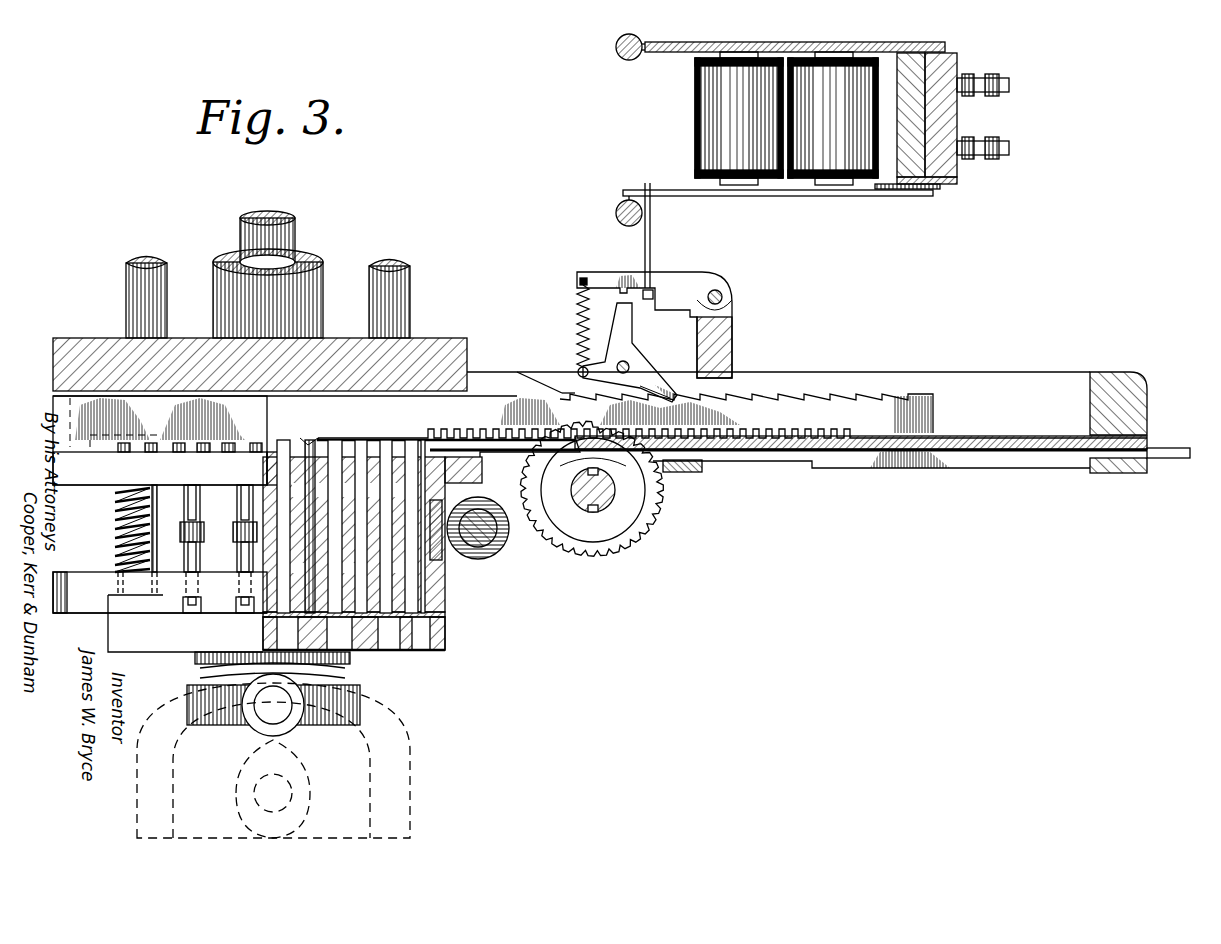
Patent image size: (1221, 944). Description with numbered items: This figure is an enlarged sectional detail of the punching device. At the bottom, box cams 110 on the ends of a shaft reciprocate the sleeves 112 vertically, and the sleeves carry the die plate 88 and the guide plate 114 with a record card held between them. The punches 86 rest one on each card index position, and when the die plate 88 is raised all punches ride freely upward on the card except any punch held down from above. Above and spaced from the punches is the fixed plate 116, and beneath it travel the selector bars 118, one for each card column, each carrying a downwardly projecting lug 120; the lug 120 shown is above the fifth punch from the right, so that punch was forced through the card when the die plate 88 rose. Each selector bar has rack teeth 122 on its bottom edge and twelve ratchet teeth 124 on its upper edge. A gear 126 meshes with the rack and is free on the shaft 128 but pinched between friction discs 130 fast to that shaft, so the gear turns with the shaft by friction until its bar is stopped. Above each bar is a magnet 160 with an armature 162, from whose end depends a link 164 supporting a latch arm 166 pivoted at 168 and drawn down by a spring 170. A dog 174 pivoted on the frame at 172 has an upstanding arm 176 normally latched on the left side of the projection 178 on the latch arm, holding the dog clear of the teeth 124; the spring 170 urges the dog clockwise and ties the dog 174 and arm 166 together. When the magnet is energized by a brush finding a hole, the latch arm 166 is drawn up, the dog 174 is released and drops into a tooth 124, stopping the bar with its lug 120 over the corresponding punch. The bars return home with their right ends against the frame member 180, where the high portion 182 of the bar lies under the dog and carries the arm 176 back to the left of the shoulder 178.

The punches 86 is at (253, 443).
The die plate 88 is at (186, 641).
The box cams 110 is at (403, 758).
The sleeves 112 is at (313, 283).
The guide plate 114 is at (80, 598).
The fixed plate 116 is at (70, 345).
The selector bars 118 is at (475, 403).
The lug 120 is at (320, 438).
The rack teeth 122 is at (505, 432).
The ratchet teeth 124 is at (745, 396).
The gear 126 is at (607, 553).
The shaft 128 is at (578, 510).
The friction discs 130 is at (627, 517).
The magnet 160 is at (805, 103).
The armature 162 is at (793, 192).
The link 164 is at (652, 252).
The latch arm 166 is at (603, 273).
The pivot 168 is at (722, 297).
The spring 170 is at (580, 302).
The pivot 172 is at (632, 372).
The dog 174 is at (640, 380).
The upstanding arm 176 is at (697, 318).
The projection 178 is at (618, 303).
The frame member 180 is at (1098, 382).
The high portion 182 is at (527, 392).